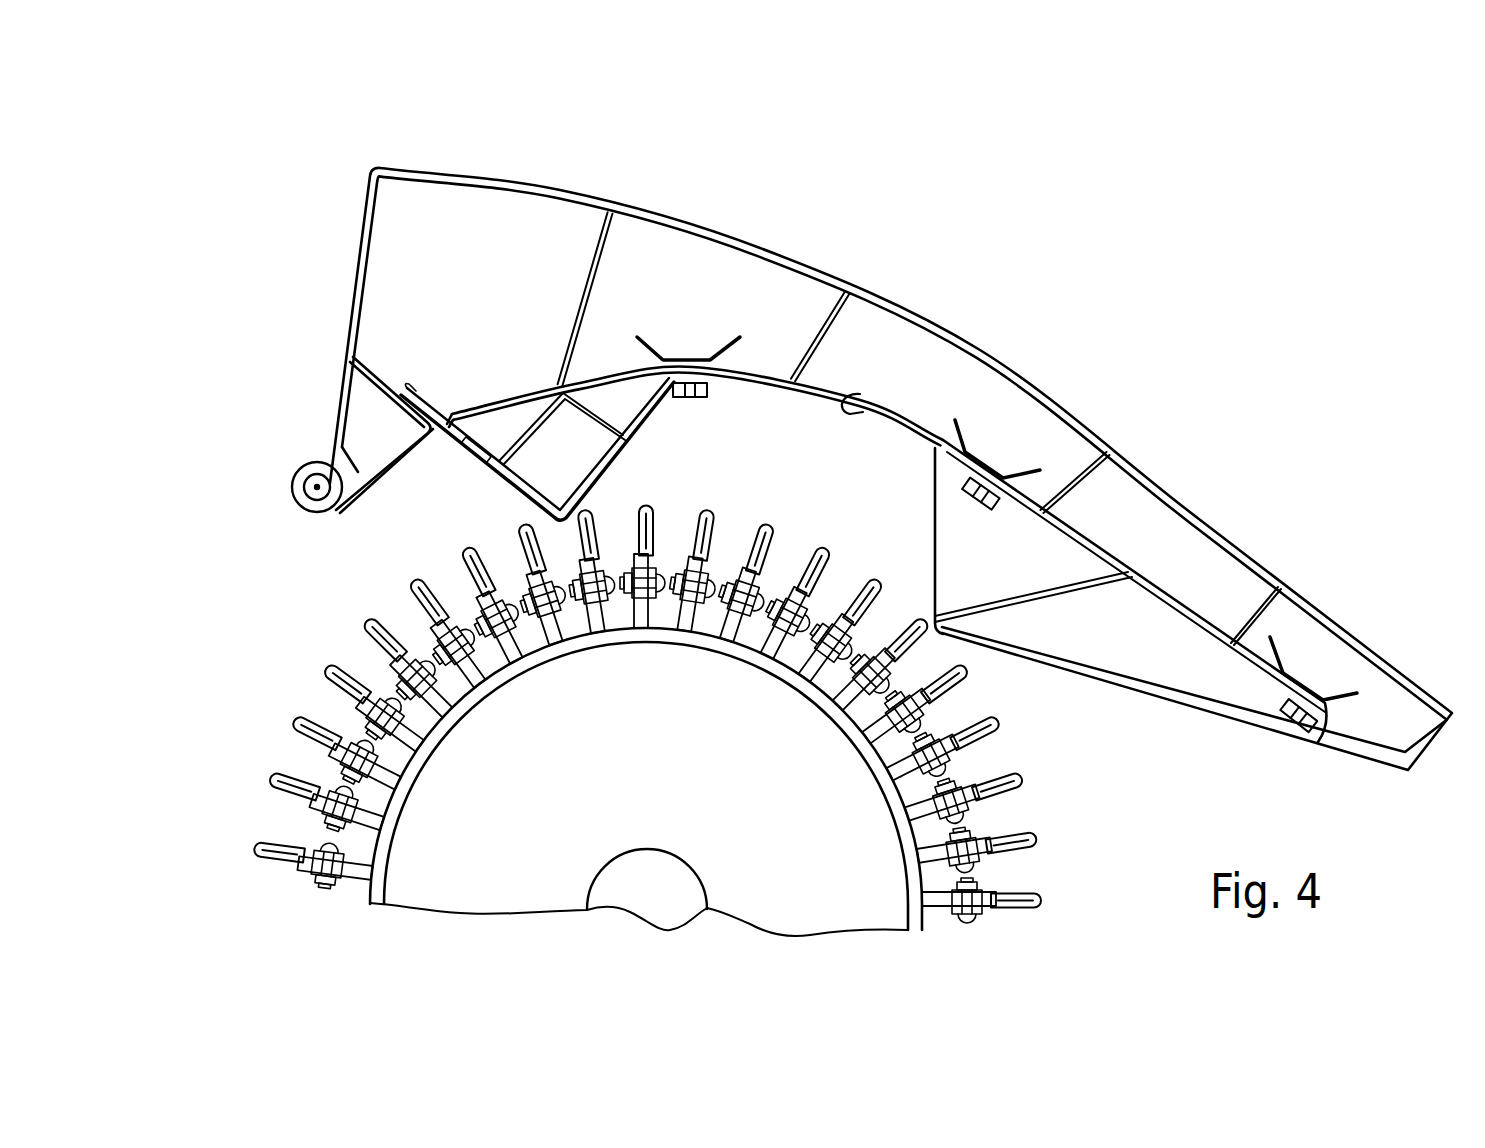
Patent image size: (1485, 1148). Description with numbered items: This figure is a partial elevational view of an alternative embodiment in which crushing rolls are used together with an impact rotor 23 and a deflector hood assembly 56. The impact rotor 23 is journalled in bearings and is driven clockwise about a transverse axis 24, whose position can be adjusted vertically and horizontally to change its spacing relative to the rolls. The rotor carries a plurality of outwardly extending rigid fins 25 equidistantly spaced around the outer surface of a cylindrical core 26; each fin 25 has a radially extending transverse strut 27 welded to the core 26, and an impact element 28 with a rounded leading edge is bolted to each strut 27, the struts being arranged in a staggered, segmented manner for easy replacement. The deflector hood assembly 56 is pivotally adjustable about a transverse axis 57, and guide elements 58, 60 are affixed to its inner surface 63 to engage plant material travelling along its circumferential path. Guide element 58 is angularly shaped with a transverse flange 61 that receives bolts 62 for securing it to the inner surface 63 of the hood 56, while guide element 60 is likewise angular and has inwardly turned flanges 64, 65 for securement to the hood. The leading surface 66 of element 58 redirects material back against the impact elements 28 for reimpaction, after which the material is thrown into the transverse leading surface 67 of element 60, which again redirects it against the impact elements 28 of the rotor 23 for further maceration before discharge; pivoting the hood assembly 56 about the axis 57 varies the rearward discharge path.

The impact rotor 23 is at (1100, 865).
The transverse axis 24 is at (640, 858).
The fins 25 is at (289, 870).
The cylindrical core 26 is at (778, 665).
The transverse strut 27 is at (463, 680).
The impact element 28 is at (790, 550).
The deflector hood assembly 56 is at (778, 190).
The transverse axis 57 is at (300, 478).
The guide element 58 is at (580, 470).
The guide element 60 is at (950, 554).
The transverse flange 61 is at (715, 378).
The bolts 62 is at (690, 398).
The inner surface 63 is at (862, 395).
The inwardly turned flange 64 is at (940, 440).
The inwardly turned flange 65 is at (1258, 668).
The leading surface 66 is at (520, 492).
The transverse leading surface 67 is at (932, 528).